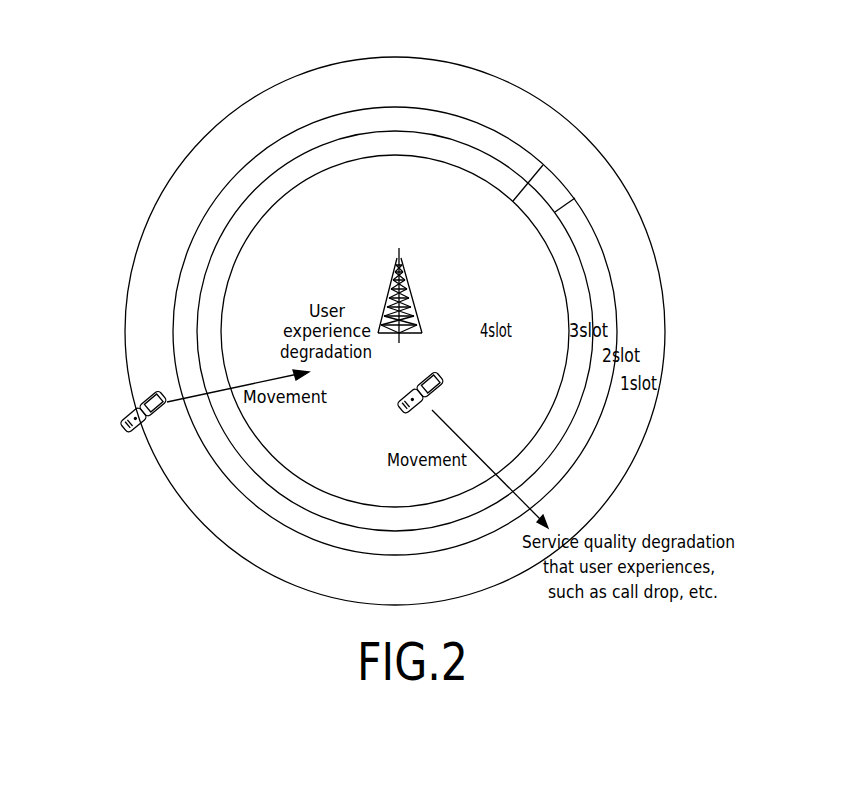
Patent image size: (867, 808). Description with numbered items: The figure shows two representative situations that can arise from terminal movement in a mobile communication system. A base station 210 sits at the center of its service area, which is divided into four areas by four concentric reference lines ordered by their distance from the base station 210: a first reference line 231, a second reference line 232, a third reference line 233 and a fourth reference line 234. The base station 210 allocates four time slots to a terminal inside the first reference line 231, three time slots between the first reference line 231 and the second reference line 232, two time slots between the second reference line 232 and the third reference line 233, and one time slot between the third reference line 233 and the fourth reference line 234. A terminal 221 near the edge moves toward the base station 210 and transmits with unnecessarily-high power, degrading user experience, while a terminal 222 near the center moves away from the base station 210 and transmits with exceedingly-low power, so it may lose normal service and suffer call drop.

The base station 210 is at (410, 288).
The terminal moving toward the base station 221 is at (126, 418).
The terminal moving away from the base station 222 is at (440, 380).
The first reference line 231 is at (543, 165).
The second reference line 232 is at (575, 198).
The third reference line 233 is at (598, 238).
The fourth reference line 234 is at (658, 272).